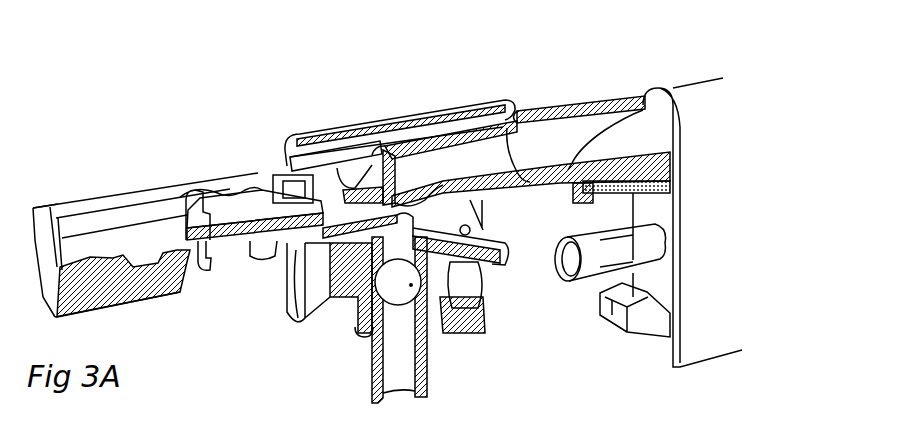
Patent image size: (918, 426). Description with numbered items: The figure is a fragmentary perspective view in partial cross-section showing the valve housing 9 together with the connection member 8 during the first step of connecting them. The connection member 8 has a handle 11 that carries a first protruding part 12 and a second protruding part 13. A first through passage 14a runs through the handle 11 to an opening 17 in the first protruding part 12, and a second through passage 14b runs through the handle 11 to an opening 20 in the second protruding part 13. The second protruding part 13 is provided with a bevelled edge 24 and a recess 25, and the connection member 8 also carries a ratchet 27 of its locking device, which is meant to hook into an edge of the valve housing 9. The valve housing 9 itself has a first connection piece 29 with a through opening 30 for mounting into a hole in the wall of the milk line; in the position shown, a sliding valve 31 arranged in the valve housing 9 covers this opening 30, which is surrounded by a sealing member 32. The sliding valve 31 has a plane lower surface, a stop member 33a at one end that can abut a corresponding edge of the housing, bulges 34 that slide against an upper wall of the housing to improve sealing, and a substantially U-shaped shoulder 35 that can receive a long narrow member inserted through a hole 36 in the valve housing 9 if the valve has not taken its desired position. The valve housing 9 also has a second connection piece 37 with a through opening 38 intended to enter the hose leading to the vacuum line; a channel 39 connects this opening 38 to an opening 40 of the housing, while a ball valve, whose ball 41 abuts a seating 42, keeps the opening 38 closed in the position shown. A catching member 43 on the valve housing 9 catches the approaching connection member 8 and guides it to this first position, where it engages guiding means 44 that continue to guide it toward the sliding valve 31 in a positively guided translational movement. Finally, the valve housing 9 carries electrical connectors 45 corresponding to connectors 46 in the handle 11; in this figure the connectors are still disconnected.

The connection member 8 is at (742, 137).
The valve housing 9 is at (262, 152).
The handle 11 is at (688, 80).
The first protruding part 12 is at (553, 110).
The second protruding part 13 is at (593, 277).
The first through passage 14a is at (553, 157).
The second through passage 14b is at (662, 250).
The opening 17 is at (440, 185).
The opening 20 is at (556, 252).
The bevelled edge 24 is at (553, 257).
The recess 25 is at (560, 278).
The ratchet 27 is at (643, 343).
The first connection piece 29 is at (206, 265).
The through opening 30 is at (222, 241).
The sliding valve 31 is at (245, 212).
The sealing member 32 is at (247, 243).
The stop member 33a is at (160, 250).
The bulges 34 is at (196, 190).
The U-shaped shoulder 35 is at (140, 191).
The hole 36 is at (58, 208).
The second connection piece 37 is at (427, 353).
The through opening 38 is at (391, 370).
The channel 39 is at (429, 287).
The opening 40 is at (486, 290).
The ball 41 is at (387, 291).
The seating 42 is at (372, 333).
The catching member 43 is at (497, 110).
The guiding means 44 is at (350, 150).
The connectors 45 is at (483, 220).
The connectors 46 is at (628, 196).